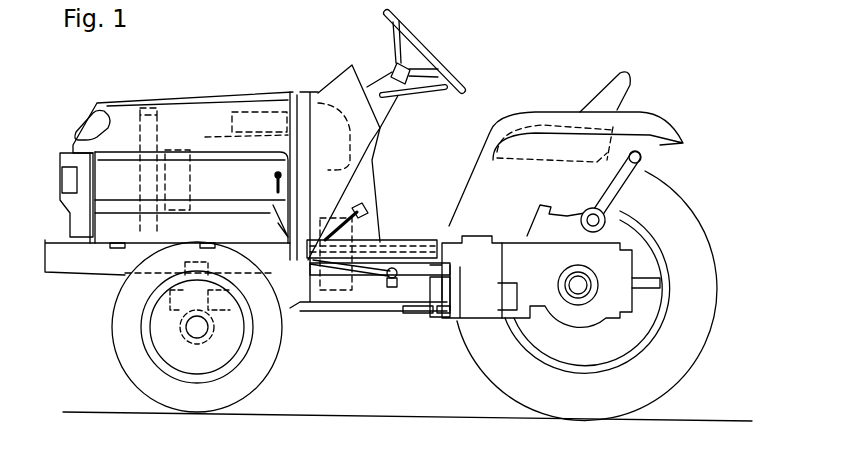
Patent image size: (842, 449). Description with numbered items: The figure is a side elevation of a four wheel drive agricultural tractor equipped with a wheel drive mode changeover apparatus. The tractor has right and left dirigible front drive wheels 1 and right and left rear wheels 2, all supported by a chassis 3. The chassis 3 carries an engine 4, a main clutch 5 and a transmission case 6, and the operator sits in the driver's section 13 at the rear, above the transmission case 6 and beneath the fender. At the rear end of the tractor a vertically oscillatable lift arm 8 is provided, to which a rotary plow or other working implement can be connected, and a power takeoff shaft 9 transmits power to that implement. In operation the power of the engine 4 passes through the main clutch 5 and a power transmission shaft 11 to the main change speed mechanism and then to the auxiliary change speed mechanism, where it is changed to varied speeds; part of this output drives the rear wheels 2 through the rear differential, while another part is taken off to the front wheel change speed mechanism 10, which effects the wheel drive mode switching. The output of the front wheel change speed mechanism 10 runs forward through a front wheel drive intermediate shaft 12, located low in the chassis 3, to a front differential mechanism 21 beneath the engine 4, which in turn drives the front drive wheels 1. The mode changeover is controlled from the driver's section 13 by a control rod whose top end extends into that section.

The front drive wheels 1 is at (107, 308).
The rear wheels 2 is at (697, 353).
The chassis 3 is at (369, 307).
The engine 4 is at (215, 143).
The main clutch 5 is at (382, 200).
The transmission case 6 is at (483, 240).
The lift arm 8 is at (628, 194).
The power takeoff shaft 9 is at (650, 278).
The front wheel change speed mechanism 10 is at (485, 308).
The power transmission shaft 11 is at (418, 250).
The front wheel drive intermediate shaft 12 is at (323, 313).
The driver's section 13 is at (497, 99).
The front differential mechanism 21 is at (160, 335).